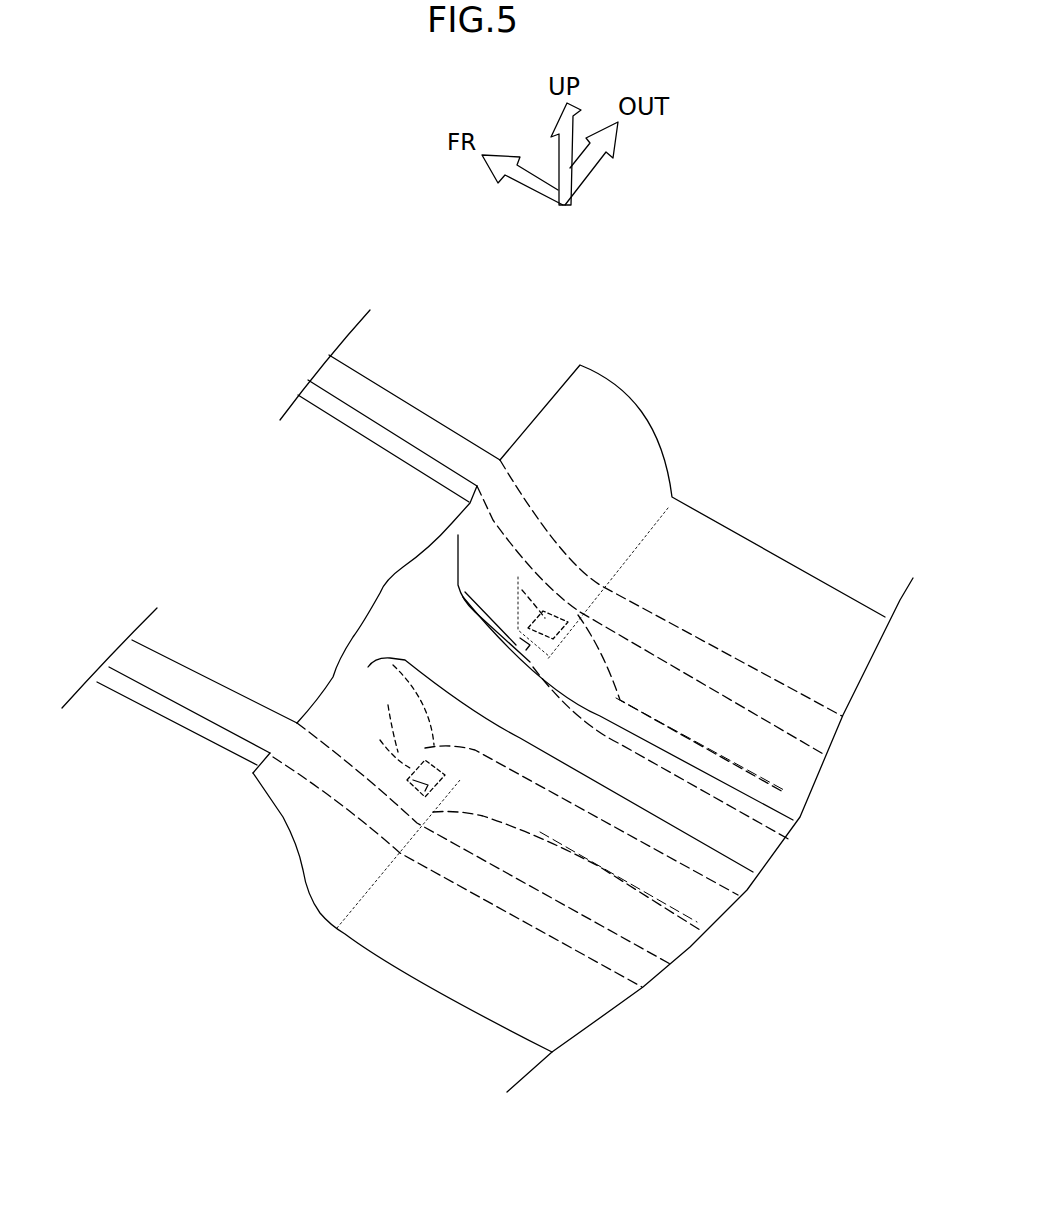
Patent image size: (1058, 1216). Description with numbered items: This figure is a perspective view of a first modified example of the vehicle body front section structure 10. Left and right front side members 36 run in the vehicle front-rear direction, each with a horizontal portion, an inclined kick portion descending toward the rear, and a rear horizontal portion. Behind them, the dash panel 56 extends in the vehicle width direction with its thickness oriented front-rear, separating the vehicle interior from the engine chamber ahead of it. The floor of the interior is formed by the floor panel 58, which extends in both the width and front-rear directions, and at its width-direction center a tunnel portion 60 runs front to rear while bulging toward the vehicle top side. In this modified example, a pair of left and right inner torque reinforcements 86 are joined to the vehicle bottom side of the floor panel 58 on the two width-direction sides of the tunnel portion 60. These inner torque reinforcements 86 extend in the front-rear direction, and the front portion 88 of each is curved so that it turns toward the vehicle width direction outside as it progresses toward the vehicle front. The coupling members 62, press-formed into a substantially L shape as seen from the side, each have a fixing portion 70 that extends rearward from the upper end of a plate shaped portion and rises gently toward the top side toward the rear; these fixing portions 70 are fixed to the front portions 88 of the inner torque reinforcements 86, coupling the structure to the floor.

The vehicle body structure 10 is at (636, 318).
The front side member 36 is at (436, 421).
The dash panel 56 is at (337, 683).
The floor panel 58 is at (847, 663).
The tunnel portion 60 is at (753, 830).
The coupling member 62 is at (520, 643).
The fixing portion 70 is at (522, 590).
The inner torque reinforcement 86 is at (767, 775).
The front portion 88 is at (515, 612).